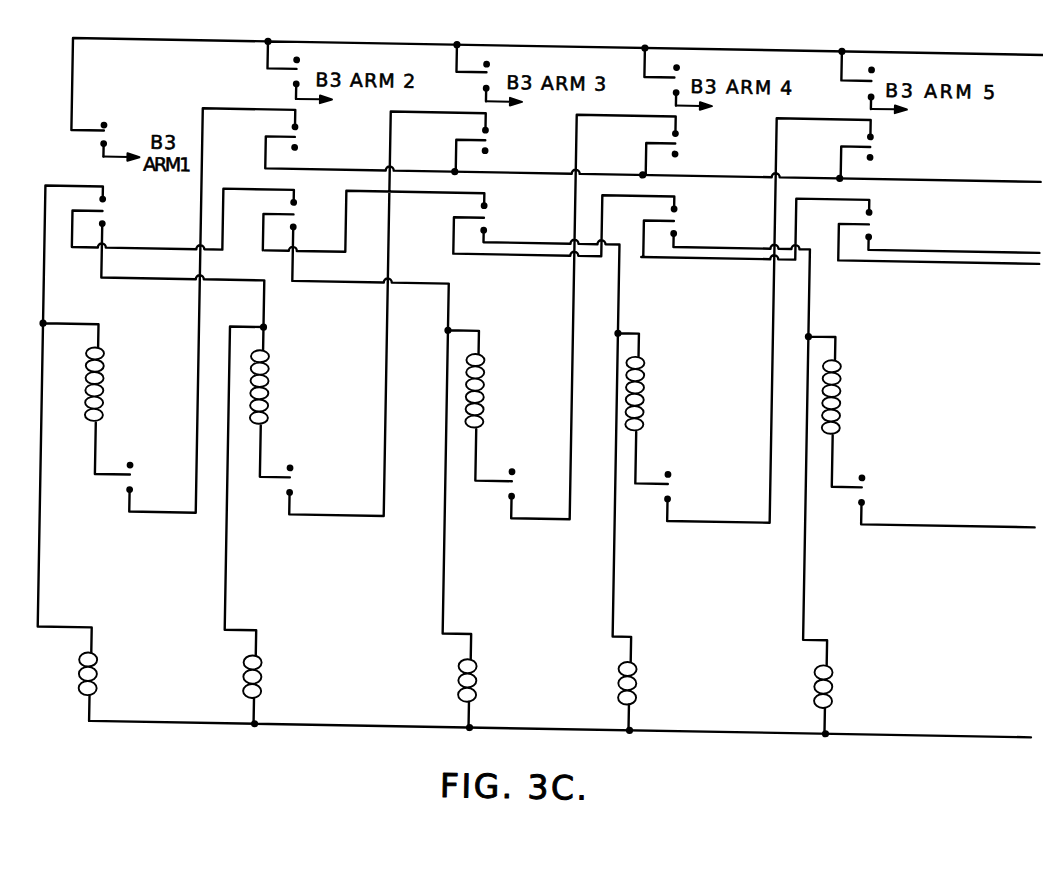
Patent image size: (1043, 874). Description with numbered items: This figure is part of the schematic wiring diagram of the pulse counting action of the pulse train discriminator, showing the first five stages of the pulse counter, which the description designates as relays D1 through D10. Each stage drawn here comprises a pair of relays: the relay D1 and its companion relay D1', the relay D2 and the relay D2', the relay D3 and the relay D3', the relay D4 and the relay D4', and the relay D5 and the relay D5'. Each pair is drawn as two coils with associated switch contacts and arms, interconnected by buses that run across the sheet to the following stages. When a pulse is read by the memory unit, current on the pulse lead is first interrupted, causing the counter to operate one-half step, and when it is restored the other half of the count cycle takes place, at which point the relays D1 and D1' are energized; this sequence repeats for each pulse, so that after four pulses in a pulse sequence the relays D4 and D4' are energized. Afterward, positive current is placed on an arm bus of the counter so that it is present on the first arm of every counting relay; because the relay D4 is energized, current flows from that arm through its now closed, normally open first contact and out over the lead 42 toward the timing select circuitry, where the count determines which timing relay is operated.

The lead 42 is at (691, 90).
The relay D1 is at (111, 384).
The relay D2 is at (280, 387).
The relay D3 is at (493, 391).
The relay D4 is at (654, 394).
The relay D5 is at (850, 397).
The relay D1' is at (108, 674).
The relay D2' is at (276, 677).
The relay D3' is at (492, 681).
The relay D4' is at (653, 684).
The relay D5' is at (849, 687).